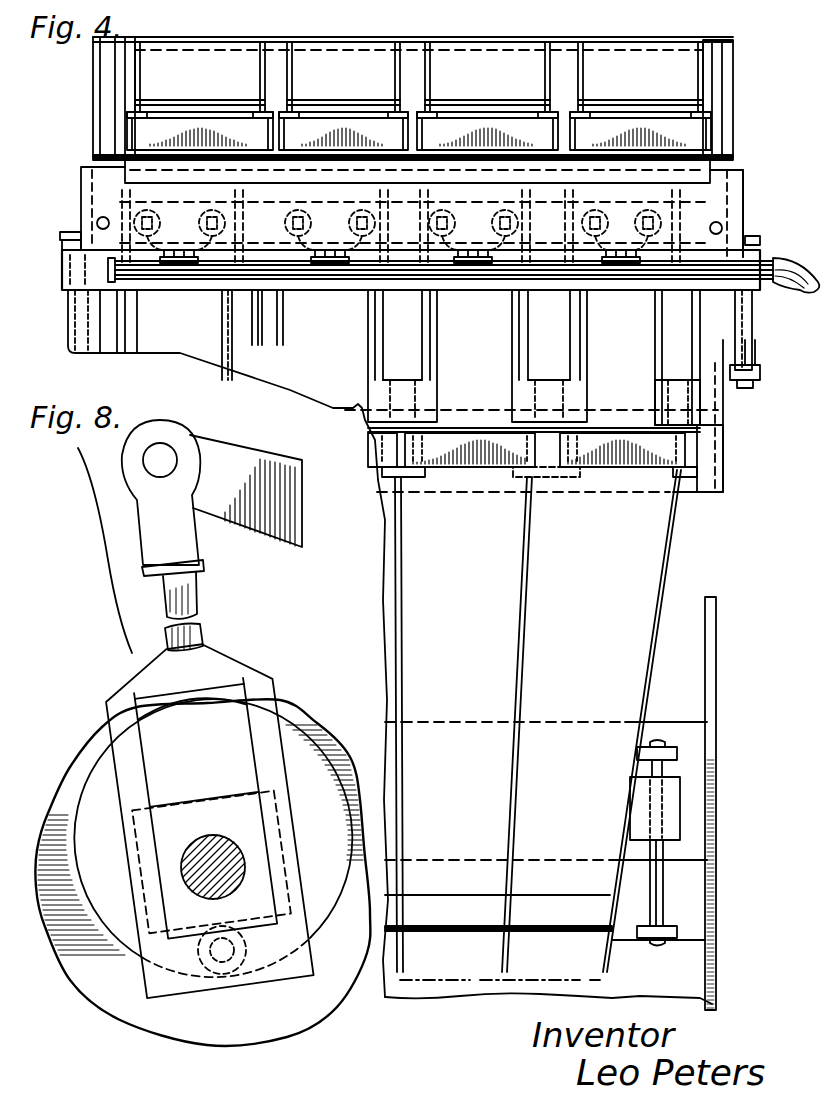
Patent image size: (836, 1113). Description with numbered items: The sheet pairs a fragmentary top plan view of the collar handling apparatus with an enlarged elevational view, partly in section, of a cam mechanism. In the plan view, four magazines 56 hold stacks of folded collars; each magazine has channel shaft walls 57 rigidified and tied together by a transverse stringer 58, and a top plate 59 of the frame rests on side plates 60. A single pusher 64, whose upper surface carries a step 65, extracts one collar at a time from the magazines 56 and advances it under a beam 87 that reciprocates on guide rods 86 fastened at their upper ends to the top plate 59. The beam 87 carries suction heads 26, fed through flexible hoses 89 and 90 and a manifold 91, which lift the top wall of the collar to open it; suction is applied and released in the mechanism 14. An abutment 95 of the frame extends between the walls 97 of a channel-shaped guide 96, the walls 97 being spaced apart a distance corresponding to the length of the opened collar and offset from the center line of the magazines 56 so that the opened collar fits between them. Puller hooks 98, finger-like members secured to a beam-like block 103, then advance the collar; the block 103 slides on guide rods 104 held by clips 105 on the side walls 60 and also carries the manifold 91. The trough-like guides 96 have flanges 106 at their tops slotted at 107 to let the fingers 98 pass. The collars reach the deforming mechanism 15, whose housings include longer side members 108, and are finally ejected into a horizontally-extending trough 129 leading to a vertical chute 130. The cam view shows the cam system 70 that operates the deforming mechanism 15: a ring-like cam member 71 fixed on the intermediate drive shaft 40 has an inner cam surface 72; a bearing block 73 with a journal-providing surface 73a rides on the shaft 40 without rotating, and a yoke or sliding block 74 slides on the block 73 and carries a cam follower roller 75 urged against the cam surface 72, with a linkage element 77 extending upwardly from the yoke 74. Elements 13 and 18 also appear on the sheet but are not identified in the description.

In FIG. 4, the upper frame assembly 13 is at (85, 92).
In FIG. 4, the mechanism 14 is at (77, 206).
In FIG. 4, the deforming mechanism 15 is at (695, 448).
In FIG. 8, the bar 18 is at (262, 480).
In FIG. 4, the suction heads 26 is at (295, 300).
In FIG. 8, the intermediate drive shaft 40 is at (228, 858).
In FIG. 4, the magazine 56 is at (187, 112).
In FIG. 4, the channel shaft walls 57 is at (140, 110).
In FIG. 4, the transverse stringer 58 is at (712, 165).
In FIG. 4, the top plate 59 is at (735, 200).
In FIG. 4, the side plates 60 is at (82, 172).
In FIG. 4, the pusher 64 is at (532, 70).
In FIG. 4, the step 65 is at (302, 100).
In FIG. 8, the cam system 70 is at (118, 1040).
In FIG. 8, the ring-like cam member 71 is at (300, 1030).
In FIG. 8, the inner cam surface 72 is at (95, 880).
In FIG. 8, the bearing block 73 is at (165, 812).
In FIG. 8, the journal-providing surface 73a is at (198, 830).
In FIG. 8, the yoke 74 is at (268, 676).
In FIG. 8, the cam follower roller 75 is at (222, 974).
In FIG. 8, the linkage element 77 is at (205, 555).
In FIG. 4, the guide rods 86 is at (722, 228).
In FIG. 4, the beam 87 is at (168, 200).
In FIG. 4, the flexible hose 89 is at (798, 262).
In FIG. 4, the flexible hose 90 is at (356, 265).
In FIG. 4, the manifold 91 is at (752, 278).
In FIG. 4, the abutment 95 is at (530, 245).
In FIG. 4, the channel-shaped guide 96 is at (475, 208).
In FIG. 4, the walls 97 is at (420, 208).
In FIG. 4, the puller hooks 98 is at (522, 200).
In FIG. 4, the block 103 is at (62, 272).
In FIG. 4, the guide rods 104 is at (70, 310).
In FIG. 4, the clips 105 is at (62, 236).
In FIG. 4, the flanges 106 is at (218, 308).
In FIG. 4, the slots 107 is at (232, 360).
In FIG. 4, the side member 108 is at (470, 462).
In FIG. 4, the horizontally-extending trough 129 is at (472, 672).
In FIG. 4, the vertical chute 130 is at (466, 966).